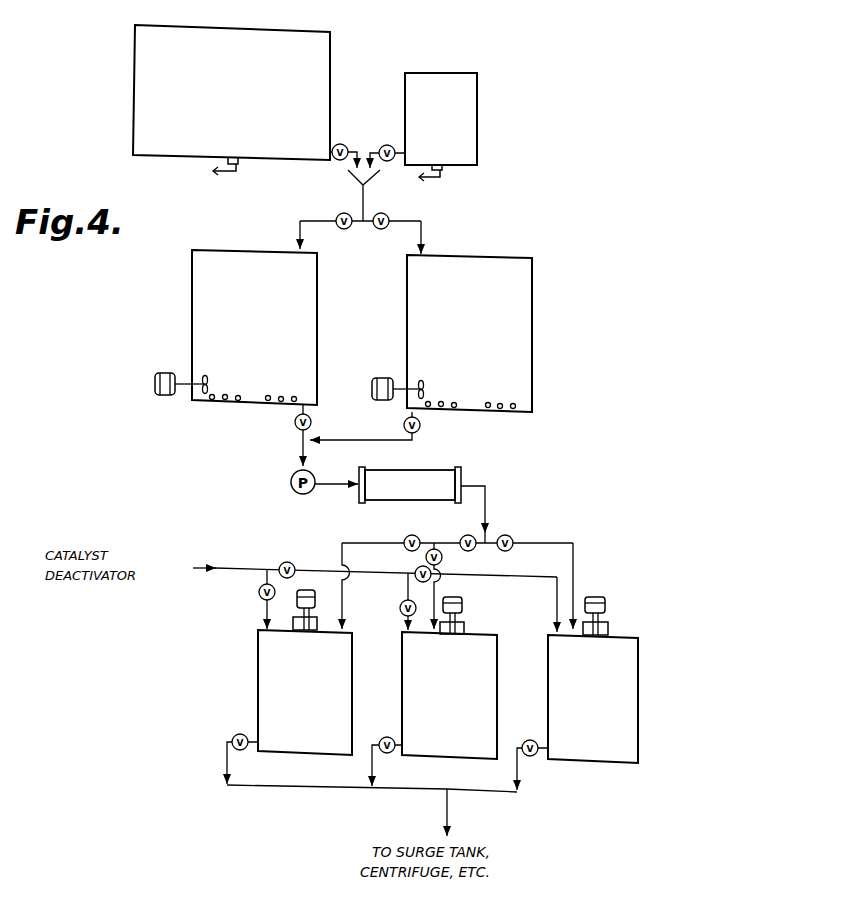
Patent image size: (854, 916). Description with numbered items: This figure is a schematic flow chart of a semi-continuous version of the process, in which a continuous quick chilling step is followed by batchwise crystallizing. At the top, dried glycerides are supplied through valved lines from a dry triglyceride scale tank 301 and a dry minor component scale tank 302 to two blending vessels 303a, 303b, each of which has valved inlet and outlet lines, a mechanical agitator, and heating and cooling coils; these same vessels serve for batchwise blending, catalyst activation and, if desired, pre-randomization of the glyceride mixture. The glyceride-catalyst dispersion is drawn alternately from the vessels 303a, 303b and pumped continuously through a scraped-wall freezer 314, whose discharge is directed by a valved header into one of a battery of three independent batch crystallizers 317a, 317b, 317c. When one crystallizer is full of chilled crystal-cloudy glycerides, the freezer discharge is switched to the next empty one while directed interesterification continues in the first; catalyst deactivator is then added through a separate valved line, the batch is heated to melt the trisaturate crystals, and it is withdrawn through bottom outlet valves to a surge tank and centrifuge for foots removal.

The dry triglyceride scale tank 301 is at (133, 111).
The dry minor component scale tank 302 is at (478, 146).
The vessel 303a is at (236, 327).
The vessel 303b is at (452, 333).
The scraped-wall freezer 314 is at (438, 467).
The batch crystallizer 317a is at (305, 672).
The batch crystallizer 317b is at (449, 678).
The batch crystallizer 317c is at (593, 680).